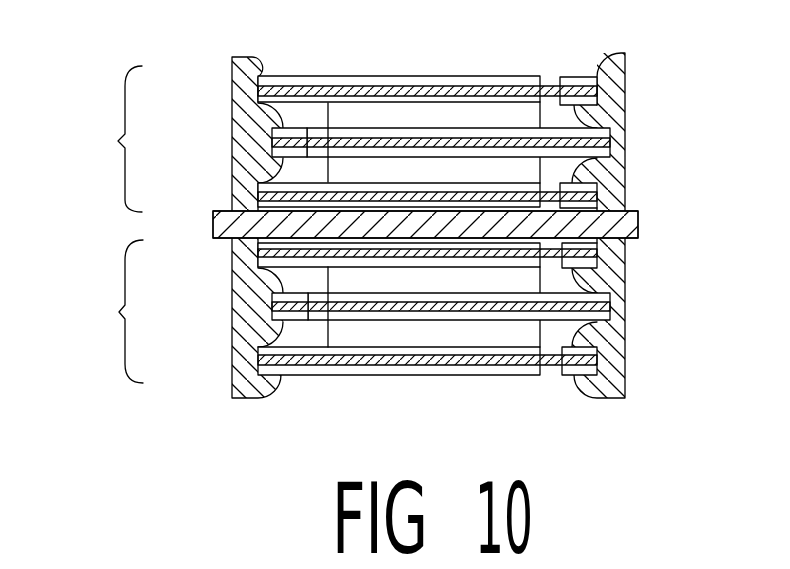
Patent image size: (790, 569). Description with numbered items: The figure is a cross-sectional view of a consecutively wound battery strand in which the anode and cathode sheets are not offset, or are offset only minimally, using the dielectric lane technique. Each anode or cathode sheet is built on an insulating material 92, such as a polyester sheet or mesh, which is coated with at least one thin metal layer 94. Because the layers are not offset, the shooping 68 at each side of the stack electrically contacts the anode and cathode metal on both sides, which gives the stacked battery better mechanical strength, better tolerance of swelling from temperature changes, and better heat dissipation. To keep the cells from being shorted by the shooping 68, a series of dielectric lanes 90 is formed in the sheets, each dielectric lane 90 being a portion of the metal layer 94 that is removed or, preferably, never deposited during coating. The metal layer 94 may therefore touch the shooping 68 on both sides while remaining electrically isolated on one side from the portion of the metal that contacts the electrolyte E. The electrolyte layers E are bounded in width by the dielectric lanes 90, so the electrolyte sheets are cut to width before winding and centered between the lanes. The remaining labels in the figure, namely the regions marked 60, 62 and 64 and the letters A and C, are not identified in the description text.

The upper stack section 60 is at (118, 141).
The lower stack section 62 is at (120, 312).
The shaft 64 is at (628, 228).
The shooping 68 is at (247, 61).
The dielectric lane 90 is at (553, 77).
The insulating material 92 is at (302, 92).
The metal layer 94 is at (468, 77).
The attachment region A is at (257, 89).
The curved support surface C is at (603, 133).
The electrolyte E is at (335, 225).